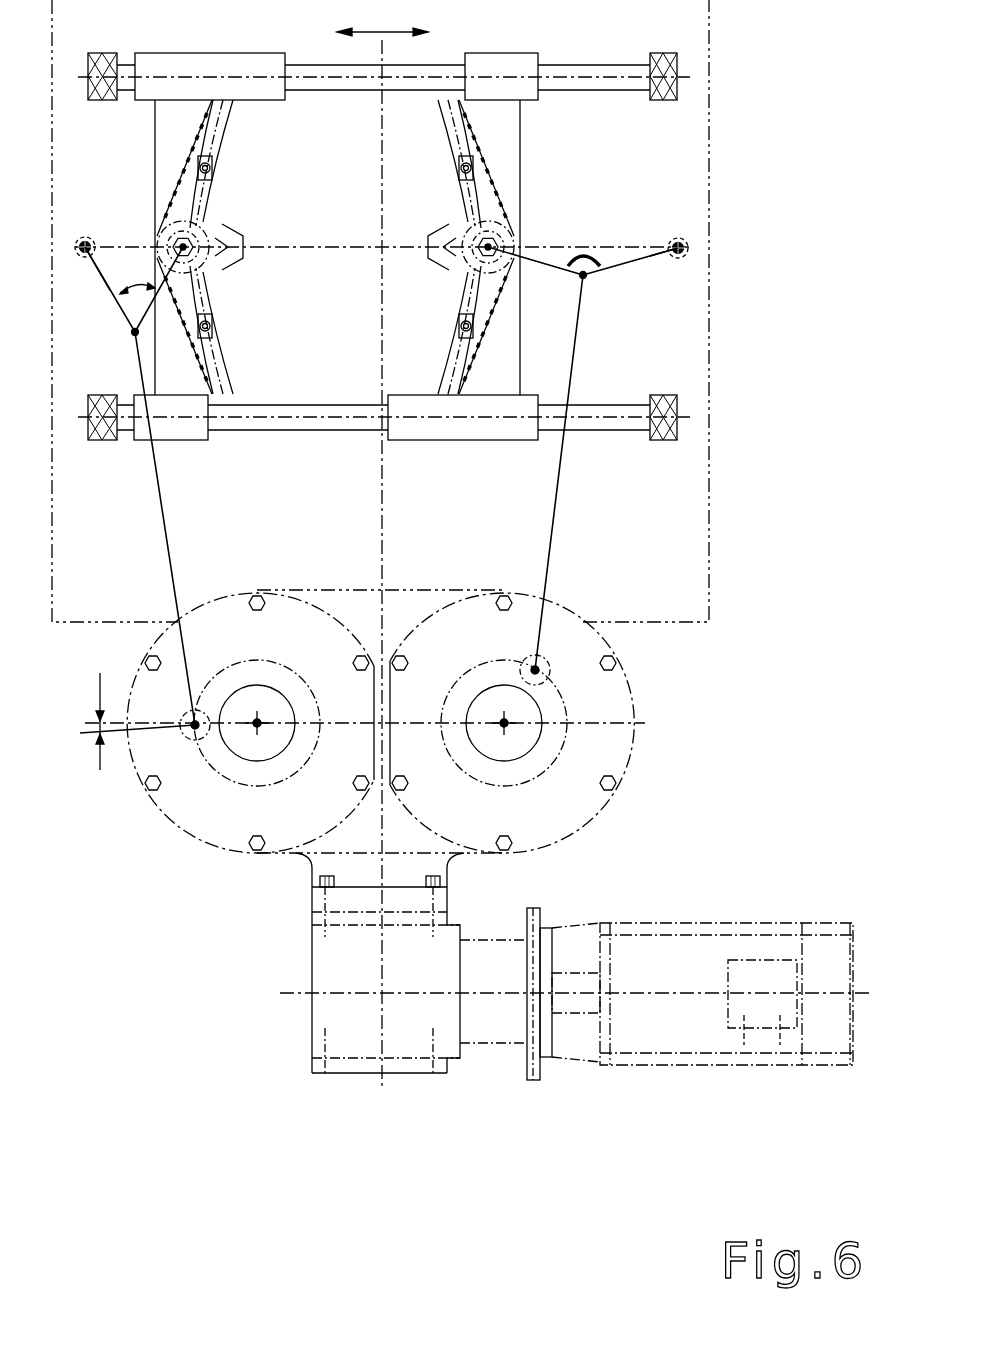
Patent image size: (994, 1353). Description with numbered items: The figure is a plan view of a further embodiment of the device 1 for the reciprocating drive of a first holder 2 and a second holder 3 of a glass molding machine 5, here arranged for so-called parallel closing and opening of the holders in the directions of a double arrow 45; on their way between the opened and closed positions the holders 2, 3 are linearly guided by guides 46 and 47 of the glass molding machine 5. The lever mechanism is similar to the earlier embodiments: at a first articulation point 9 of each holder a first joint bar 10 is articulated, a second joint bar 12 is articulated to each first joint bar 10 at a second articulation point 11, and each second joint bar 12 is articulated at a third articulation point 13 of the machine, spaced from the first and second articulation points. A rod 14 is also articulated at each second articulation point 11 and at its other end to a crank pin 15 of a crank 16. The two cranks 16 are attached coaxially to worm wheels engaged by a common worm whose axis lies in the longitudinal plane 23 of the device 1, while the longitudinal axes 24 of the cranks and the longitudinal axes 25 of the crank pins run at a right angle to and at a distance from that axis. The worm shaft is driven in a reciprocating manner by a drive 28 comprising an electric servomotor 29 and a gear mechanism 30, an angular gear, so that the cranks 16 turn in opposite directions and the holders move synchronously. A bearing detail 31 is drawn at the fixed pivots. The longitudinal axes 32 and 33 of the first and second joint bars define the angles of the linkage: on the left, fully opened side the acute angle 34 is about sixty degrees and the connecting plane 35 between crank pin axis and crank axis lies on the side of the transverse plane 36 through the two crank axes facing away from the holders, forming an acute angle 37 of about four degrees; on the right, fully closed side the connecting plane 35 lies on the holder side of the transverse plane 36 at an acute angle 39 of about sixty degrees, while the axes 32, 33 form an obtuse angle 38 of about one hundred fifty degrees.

The device 1 is at (238, 877).
The first holder 2 is at (155, 128).
The second holder 3 is at (522, 162).
The glass molding machine 5 is at (705, 622).
The first articulation point 9 is at (193, 237).
The first joint bar 10 is at (200, 268).
The second articulation point 11 is at (130, 338).
The second joint bar 12 is at (110, 292).
The third articulation point 13 is at (86, 240).
The rod 14 is at (165, 527).
The crank pin 15 is at (150, 782).
The crank 16 is at (288, 792).
The longitudinal plane 23 is at (386, 493).
The longitudinal axis of the crank 24 is at (262, 715).
The longitudinal axis of the crank pin 25 is at (212, 735).
The drive 28 is at (575, 1062).
The electric servomotor 29 is at (670, 1060).
The gear mechanism 30 is at (312, 1032).
The pivot bearing 31 is at (120, 243).
The longitudinal axis of the first joint bar 32 is at (222, 320).
The longitudinal axis of the second joint bar 33 is at (115, 325).
The acute angle 34 is at (136, 290).
The connecting plane 35 is at (298, 740).
The transverse plane 36 is at (404, 760).
The acute angle 37 is at (100, 745).
The obtuse angle 38 is at (583, 258).
The acute angle 39 is at (548, 690).
The double arrow 45 is at (380, 32).
The guide 46 is at (597, 70).
The guide 47 is at (280, 420).